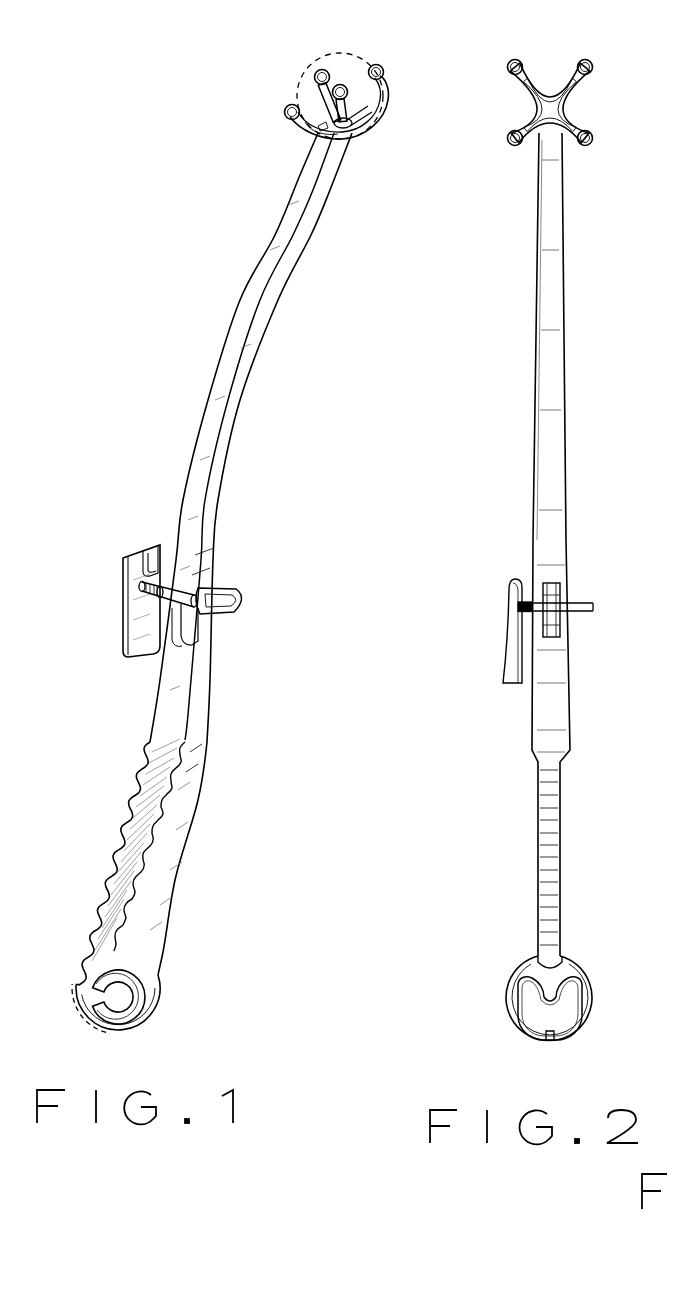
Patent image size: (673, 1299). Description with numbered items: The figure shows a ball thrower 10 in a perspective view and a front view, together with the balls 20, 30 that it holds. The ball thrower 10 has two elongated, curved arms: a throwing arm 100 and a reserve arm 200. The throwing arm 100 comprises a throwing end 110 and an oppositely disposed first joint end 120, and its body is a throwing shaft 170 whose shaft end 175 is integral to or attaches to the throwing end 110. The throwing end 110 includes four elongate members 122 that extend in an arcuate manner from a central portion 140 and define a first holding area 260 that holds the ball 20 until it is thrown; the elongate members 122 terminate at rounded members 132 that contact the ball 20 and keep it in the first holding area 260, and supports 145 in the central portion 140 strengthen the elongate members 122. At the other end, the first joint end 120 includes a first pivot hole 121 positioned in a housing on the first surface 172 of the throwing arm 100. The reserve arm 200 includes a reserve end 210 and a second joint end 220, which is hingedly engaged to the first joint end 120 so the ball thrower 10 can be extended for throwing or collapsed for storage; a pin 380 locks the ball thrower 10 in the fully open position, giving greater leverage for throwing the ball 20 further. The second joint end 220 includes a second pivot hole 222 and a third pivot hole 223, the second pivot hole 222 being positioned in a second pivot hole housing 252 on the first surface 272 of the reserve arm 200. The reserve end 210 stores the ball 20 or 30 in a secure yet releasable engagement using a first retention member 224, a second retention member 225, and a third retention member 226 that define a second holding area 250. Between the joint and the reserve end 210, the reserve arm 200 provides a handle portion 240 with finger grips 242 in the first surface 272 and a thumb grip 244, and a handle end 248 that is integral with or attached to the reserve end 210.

In FIG. 1, the ball thrower 10 is at (150, 155).
In FIG. 2, the ball thrower 10 is at (608, 46).
In FIG. 1, the ball 20 is at (337, 53).
In FIG. 1, the ball 30 is at (88, 1022).
In FIG. 1, the throwing arm 100 is at (256, 361).
In FIG. 2, the throwing arm 100 is at (588, 256).
In FIG. 1, the throwing end 110 is at (386, 108).
In FIG. 1, the first joint end 120 is at (206, 568).
In FIG. 1, the first pivot hole 121 is at (176, 583).
In FIG. 1, the elongate members 122 is at (305, 128).
In FIG. 2, the elongate members 122 is at (536, 77).
In FIG. 1, the rounded members 132 is at (377, 65).
In FIG. 2, the rounded members 132 is at (508, 63).
In FIG. 1, the central portion 140 is at (330, 122).
In FIG. 1, the supports 145 is at (345, 130).
In FIG. 1, the throwing shaft 170 is at (252, 417).
In FIG. 2, the throwing shaft 170 is at (524, 402).
In FIG. 2, the first surface 172 is at (549, 359).
In FIG. 1, the shaft end 175 is at (371, 120).
In FIG. 1, the reserve arm 200 is at (212, 862).
In FIG. 2, the reserve arm 200 is at (594, 757).
In FIG. 1, the reserve end 210 is at (168, 1020).
In FIG. 2, the reserve end 210 is at (600, 967).
In FIG. 1, the second joint end 220 is at (213, 632).
In FIG. 2, the second joint end 220 is at (570, 664).
In FIG. 1, the second pivot hole 222 is at (148, 648).
In FIG. 2, the second pivot hole 222 is at (538, 620).
In FIG. 1, the third pivot hole 223 is at (193, 650).
In FIG. 2, the third pivot hole 223 is at (561, 619).
In FIG. 2, the first retention member 224 is at (510, 1020).
In FIG. 2, the second retention member 225 is at (549, 988).
In FIG. 2, the third retention member 226 is at (593, 1016).
In FIG. 1, the handle portion 240 is at (178, 902).
In FIG. 1, the finger grips 242 is at (128, 840).
In FIG. 1, the thumb grip 244 is at (208, 720).
In FIG. 1, the handle end 248 is at (166, 955).
In FIG. 2, the second holding area 250 is at (557, 1022).
In FIG. 2, the second pivot hole housing 252 is at (539, 603).
In FIG. 1, the first holding area 260 is at (282, 60).
In FIG. 2, the first surface 272 is at (561, 860).
In FIG. 1, the pin 380 is at (246, 598).